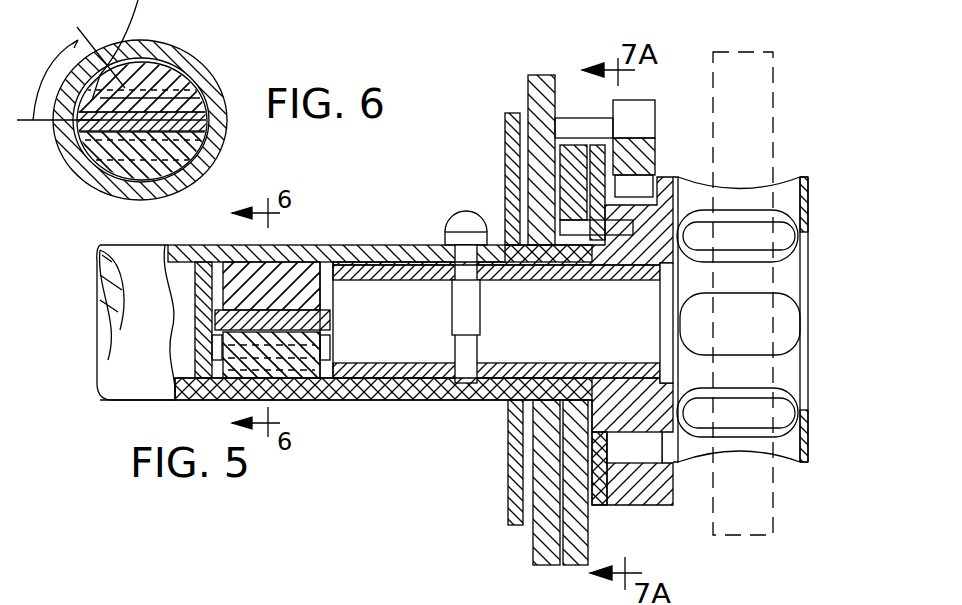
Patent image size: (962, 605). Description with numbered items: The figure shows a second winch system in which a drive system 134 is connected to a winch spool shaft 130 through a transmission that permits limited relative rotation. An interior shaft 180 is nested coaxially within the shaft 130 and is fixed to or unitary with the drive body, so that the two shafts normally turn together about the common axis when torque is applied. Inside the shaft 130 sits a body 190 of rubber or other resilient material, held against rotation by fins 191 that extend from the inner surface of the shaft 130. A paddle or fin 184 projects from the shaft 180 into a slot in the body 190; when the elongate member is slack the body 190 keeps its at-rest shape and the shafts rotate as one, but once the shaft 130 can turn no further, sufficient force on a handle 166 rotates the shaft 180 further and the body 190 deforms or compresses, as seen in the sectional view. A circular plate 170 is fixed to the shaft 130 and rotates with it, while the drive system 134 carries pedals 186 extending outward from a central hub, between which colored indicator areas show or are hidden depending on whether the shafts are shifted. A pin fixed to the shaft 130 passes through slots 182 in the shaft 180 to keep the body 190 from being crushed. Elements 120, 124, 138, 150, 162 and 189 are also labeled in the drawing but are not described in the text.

In FIG. 5, the spool assembly 120 is at (769, 280).
In FIG. 5, the flange wall 124 is at (540, 557).
In FIG. 6, the winch spool shaft 130 is at (212, 158).
In FIG. 5, the winch spool shaft 130 is at (368, 245).
In FIG. 5, the drive system 134 is at (810, 380).
In FIG. 5, the recess 138 is at (640, 458).
In FIG. 5, the bearing block 150 is at (637, 122).
In FIG. 5, the slot 162 is at (790, 317).
In FIG. 5, the handle 166 is at (782, 515).
In FIG. 5, the circular plate 170 is at (575, 567).
In FIG. 5, the interior shaft 180 is at (392, 280).
In FIG. 5, the slots 182 is at (478, 308).
In FIG. 6, the paddle or fin 184 is at (200, 136).
In FIG. 5, the paddle or fin 184 is at (215, 320).
In FIG. 5, the pedals 186 is at (607, 495).
In FIG. 5, the screw shaft 189 is at (472, 352).
In FIG. 6, the resilient body 190 is at (170, 70).
In FIG. 5, the resilient body 190 is at (245, 275).
In FIG. 6, the fins 191 is at (190, 92).